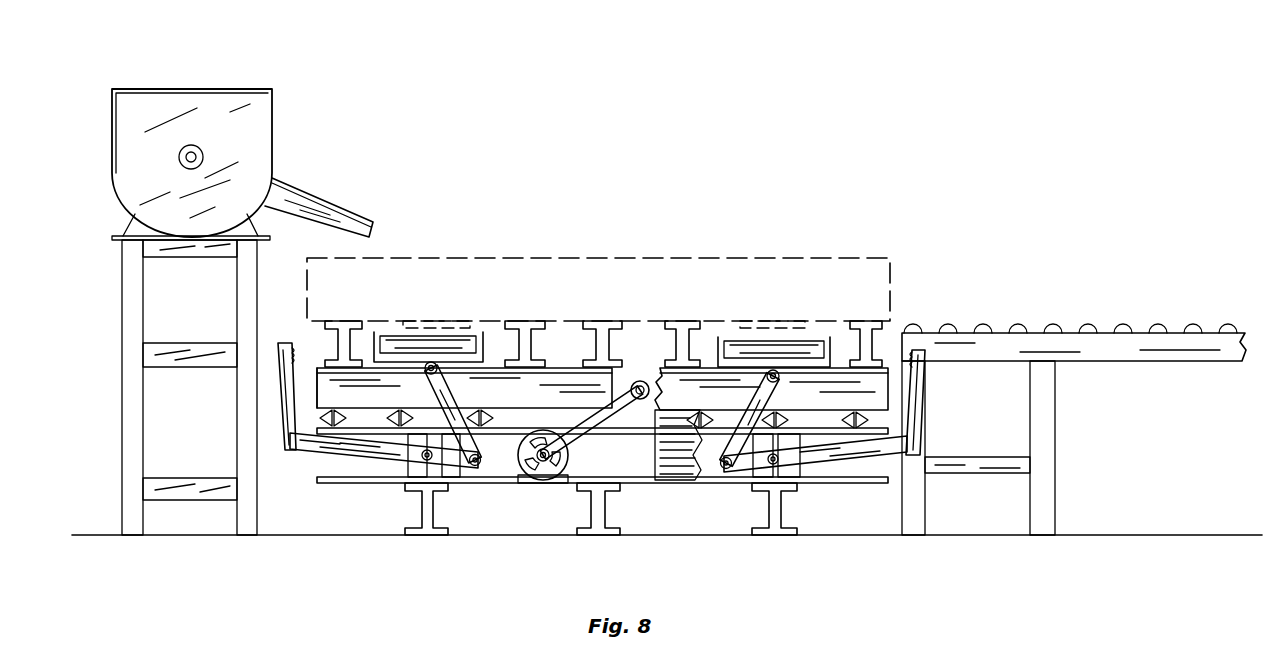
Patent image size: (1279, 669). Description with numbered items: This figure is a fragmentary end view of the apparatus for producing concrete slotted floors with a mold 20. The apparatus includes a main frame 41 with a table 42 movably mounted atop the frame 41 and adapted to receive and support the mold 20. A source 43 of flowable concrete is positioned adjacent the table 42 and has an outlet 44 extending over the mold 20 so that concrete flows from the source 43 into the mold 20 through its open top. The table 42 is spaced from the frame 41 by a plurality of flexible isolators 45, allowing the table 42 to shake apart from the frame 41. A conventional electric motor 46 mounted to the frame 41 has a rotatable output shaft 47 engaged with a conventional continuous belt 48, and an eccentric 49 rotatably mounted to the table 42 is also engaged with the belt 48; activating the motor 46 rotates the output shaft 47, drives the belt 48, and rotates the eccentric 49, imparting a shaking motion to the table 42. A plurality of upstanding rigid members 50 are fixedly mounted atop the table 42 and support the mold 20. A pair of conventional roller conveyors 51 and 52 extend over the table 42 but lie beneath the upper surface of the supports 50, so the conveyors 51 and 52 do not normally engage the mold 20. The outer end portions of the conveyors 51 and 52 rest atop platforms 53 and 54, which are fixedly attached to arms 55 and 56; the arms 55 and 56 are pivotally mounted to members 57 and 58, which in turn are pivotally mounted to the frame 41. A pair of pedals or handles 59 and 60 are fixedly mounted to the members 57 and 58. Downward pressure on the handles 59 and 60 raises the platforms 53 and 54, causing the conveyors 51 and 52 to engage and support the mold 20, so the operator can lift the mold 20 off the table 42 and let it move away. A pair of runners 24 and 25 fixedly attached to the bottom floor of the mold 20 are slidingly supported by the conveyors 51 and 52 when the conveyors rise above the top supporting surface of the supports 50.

The mold 20 is at (890, 260).
The runner 24 is at (418, 325).
The runner 25 is at (785, 322).
The main frame 41 is at (373, 483).
The table 42 is at (315, 370).
The source of flowable concrete 43 is at (170, 88).
The outlet 44 is at (362, 214).
The flexible isolators 45 is at (690, 427).
The electric motor 46 is at (547, 472).
The rotatable output shaft 47 is at (525, 460).
The continuous belt 48 is at (588, 428).
The eccentric 49 is at (643, 382).
The upstanding rigid members 50 is at (348, 322).
The roller conveyor 51 is at (488, 338).
The roller conveyor 52 is at (830, 338).
The platform 53 is at (403, 366).
The platform 54 is at (873, 372).
The arm 55 is at (463, 397).
The arm 56 is at (722, 466).
The member 57 is at (343, 457).
The member 58 is at (822, 457).
The pedal or handle 59 is at (280, 387).
The pedal or handle 60 is at (917, 400).